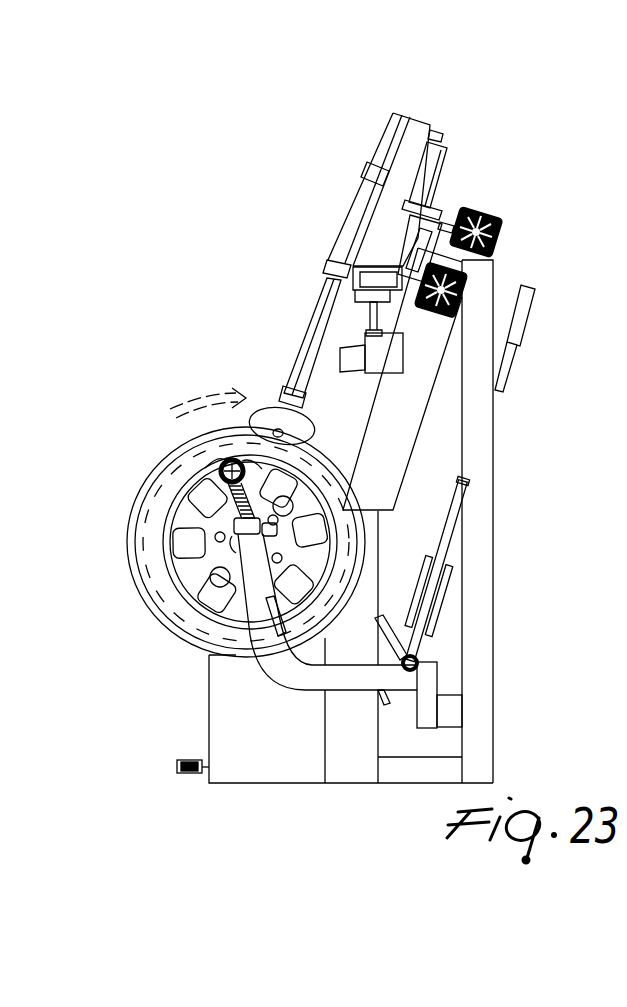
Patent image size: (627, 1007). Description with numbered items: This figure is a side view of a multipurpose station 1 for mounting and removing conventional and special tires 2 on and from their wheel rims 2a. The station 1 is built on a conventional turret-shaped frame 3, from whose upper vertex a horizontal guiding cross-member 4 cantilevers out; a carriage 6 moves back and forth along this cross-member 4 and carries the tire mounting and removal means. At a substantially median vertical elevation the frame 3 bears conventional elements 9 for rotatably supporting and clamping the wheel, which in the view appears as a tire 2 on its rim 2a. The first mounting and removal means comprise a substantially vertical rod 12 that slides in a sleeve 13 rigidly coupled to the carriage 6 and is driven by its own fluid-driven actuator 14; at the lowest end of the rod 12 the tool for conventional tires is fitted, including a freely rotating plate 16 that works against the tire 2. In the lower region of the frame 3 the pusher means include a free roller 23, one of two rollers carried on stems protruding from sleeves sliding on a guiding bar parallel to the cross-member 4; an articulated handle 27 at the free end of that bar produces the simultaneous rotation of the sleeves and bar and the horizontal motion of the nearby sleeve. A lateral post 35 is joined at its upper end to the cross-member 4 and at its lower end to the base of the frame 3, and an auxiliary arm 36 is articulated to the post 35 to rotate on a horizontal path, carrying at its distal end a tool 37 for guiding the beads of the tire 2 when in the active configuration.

The multipurpose station 1 is at (329, 443).
The tire 2 is at (219, 542).
The wheel rim 2a is at (196, 542).
The turret-shaped frame 3 is at (402, 390).
The horizontal guiding cross-member 4 is at (457, 231).
The carriage 6 is at (383, 167).
The elements for rotatably supporting and clamping the wheels 9 is at (198, 591).
The substantially vertical rod 12 is at (341, 283).
The sleeve 13 is at (372, 177).
The fluid-driven actuator 14 is at (455, 156).
The freely rotating plate 16 is at (281, 385).
The free roller 23 is at (473, 569).
The articulated handle 27 is at (537, 346).
The lateral post 35 is at (510, 521).
The auxiliary arm 36 is at (325, 647).
The tool for guiding the beads 37 is at (187, 453).